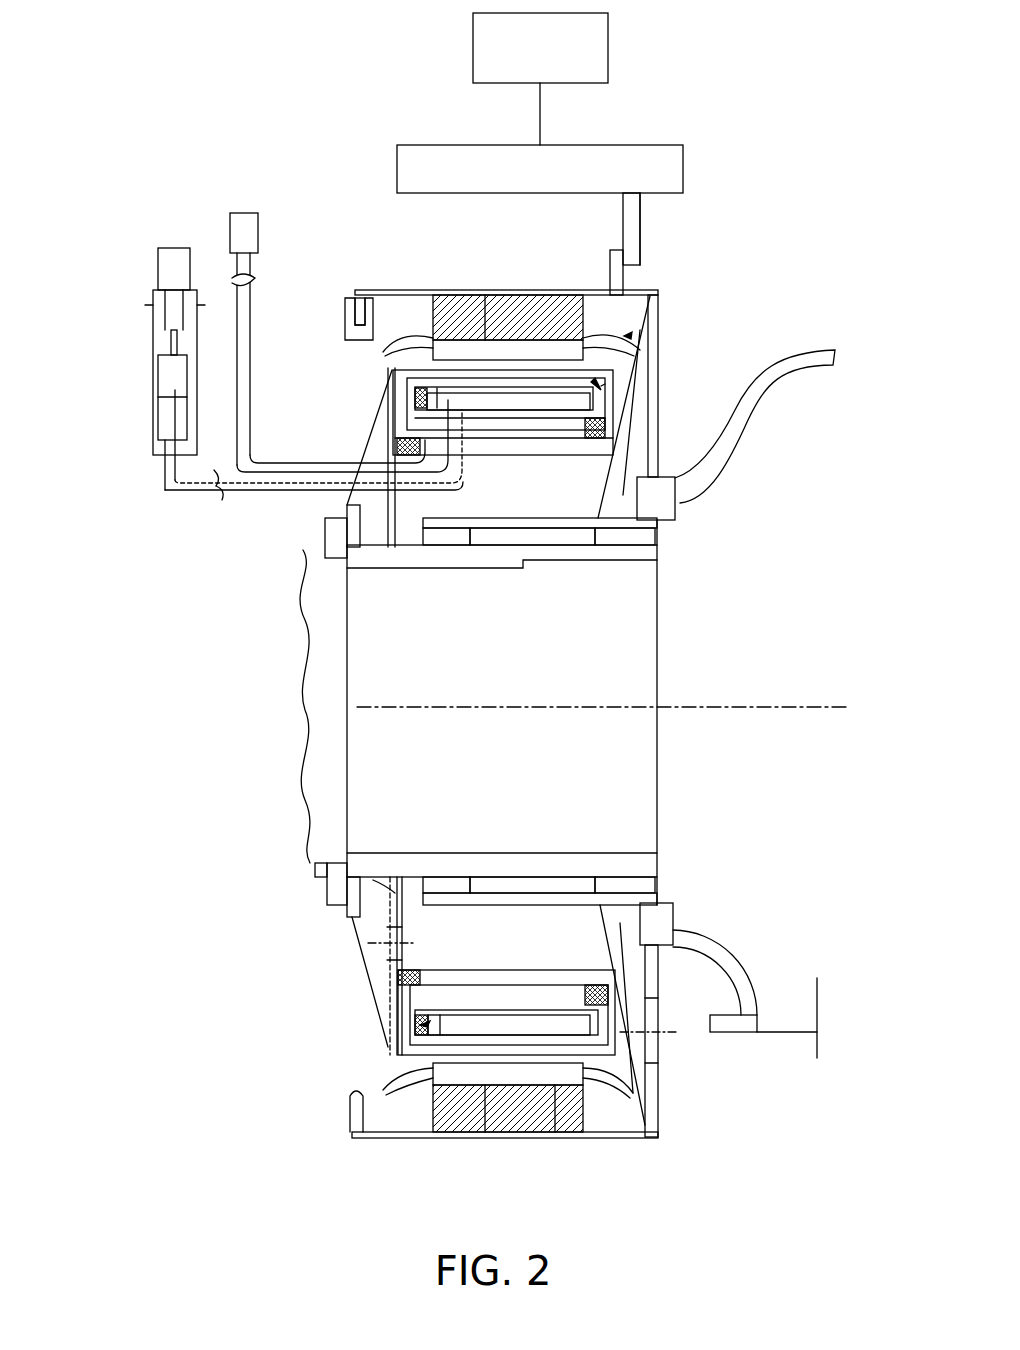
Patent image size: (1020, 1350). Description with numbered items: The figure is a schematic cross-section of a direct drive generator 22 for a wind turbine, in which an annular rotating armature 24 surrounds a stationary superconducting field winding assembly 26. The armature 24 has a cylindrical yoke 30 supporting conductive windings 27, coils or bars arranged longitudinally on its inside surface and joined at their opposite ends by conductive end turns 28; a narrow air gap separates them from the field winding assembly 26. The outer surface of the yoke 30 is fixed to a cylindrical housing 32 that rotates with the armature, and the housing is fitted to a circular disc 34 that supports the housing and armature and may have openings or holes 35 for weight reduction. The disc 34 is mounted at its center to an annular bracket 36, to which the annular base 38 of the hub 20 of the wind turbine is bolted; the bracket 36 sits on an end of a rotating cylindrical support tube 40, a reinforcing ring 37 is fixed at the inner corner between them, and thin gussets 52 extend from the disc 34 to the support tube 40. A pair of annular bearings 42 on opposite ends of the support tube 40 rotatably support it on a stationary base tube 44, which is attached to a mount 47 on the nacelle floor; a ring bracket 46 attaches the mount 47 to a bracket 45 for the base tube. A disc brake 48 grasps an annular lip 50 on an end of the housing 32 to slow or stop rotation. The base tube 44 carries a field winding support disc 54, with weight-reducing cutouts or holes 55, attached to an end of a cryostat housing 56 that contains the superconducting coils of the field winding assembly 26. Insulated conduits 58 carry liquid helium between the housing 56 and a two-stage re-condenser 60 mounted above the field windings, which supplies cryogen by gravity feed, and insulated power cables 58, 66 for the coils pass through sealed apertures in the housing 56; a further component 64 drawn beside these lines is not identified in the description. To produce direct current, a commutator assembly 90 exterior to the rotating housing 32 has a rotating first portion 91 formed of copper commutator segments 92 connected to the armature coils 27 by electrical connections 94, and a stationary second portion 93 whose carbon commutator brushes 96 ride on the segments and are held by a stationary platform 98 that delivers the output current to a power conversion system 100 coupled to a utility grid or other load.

The power conversion system 100 is at (609, 46).
The stationary platform 98 is at (684, 167).
The commutator assembly 90 is at (754, 201).
The stationary second portion 93 is at (641, 215).
The commutator brushes 96 is at (641, 243).
The rotating first portion 91 is at (641, 258).
The commutator segments 92 is at (624, 280).
The cylindrical housing 32 is at (588, 290).
The circular disc 34 is at (659, 378).
The electrical connections 94 is at (646, 310).
The annular base 38 is at (676, 505).
The hub 20 is at (820, 358).
The annular lip 50 is at (356, 298).
The disc brake 48 is at (345, 325).
The annular rotating armature 24 is at (422, 318).
The cylindrical yoke 30 is at (520, 315).
The conductive windings 27 is at (486, 340).
The conductive end turns 28 is at (400, 346).
The cryostat housing 56 is at (614, 420).
The stationary superconducting field winding assembly 26 is at (602, 388).
The reinforcing ring 37 is at (600, 510).
The gussets 52 is at (386, 430).
The cutouts or holes 55 is at (398, 945).
The field winding support disc 54 is at (388, 878).
The direct drive generator 22 is at (781, 587).
The rotating cylindrical support tube 40 is at (530, 528).
The annular bearings 42 is at (442, 535).
The stationary base tube 44 is at (395, 556).
The annular bracket 36 is at (656, 547).
The ring bracket 46 is at (321, 862).
The bracket 45 is at (350, 895).
The mount 47 is at (303, 660).
The openings or holes 35 is at (665, 1037).
The sensor 64 is at (232, 228).
The insulated power cable 66 is at (258, 282).
The two-stage re-condenser 60 is at (152, 402).
The insulated conduits 58 is at (218, 485).